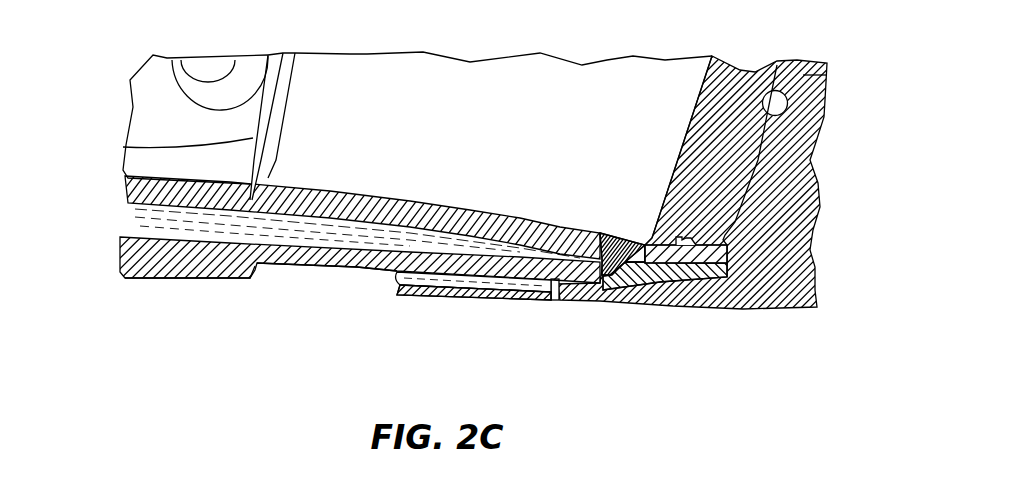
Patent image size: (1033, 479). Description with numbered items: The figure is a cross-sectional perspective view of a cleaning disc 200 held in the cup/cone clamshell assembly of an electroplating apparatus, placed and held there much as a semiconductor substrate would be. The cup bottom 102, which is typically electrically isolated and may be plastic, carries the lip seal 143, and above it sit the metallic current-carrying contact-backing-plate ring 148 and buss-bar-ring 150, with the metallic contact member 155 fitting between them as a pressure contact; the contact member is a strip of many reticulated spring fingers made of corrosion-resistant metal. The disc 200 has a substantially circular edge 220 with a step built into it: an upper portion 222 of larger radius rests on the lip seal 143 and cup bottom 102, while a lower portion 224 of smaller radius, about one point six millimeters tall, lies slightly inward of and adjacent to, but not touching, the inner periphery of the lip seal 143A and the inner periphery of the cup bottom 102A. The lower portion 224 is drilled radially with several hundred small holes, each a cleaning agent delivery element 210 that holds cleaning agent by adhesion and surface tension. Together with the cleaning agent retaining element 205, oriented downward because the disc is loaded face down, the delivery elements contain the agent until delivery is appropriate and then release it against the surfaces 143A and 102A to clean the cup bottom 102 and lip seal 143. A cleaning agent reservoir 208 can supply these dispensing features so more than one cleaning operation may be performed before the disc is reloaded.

The cleaning disc 200 is at (361, 253).
The upper portion of the edge 222 is at (180, 250).
The substantially circular edge 220 is at (107, 237).
The lower portion of the edge 224 is at (167, 278).
The cleaning agent reservoir 208 is at (297, 267).
The cleaning agent delivery element 210 is at (392, 283).
The cleaning agent retaining element 205 is at (473, 300).
The metallic contact member 155 is at (607, 249).
The buss-bar-ring 150 is at (697, 157).
The contact-backing-plate ring 148 is at (708, 239).
The lip seal 143 is at (684, 281).
The inner periphery of the lip seal 143A is at (569, 287).
The cup bottom 102 is at (775, 284).
The inner periphery of the cup bottom 102A is at (567, 298).